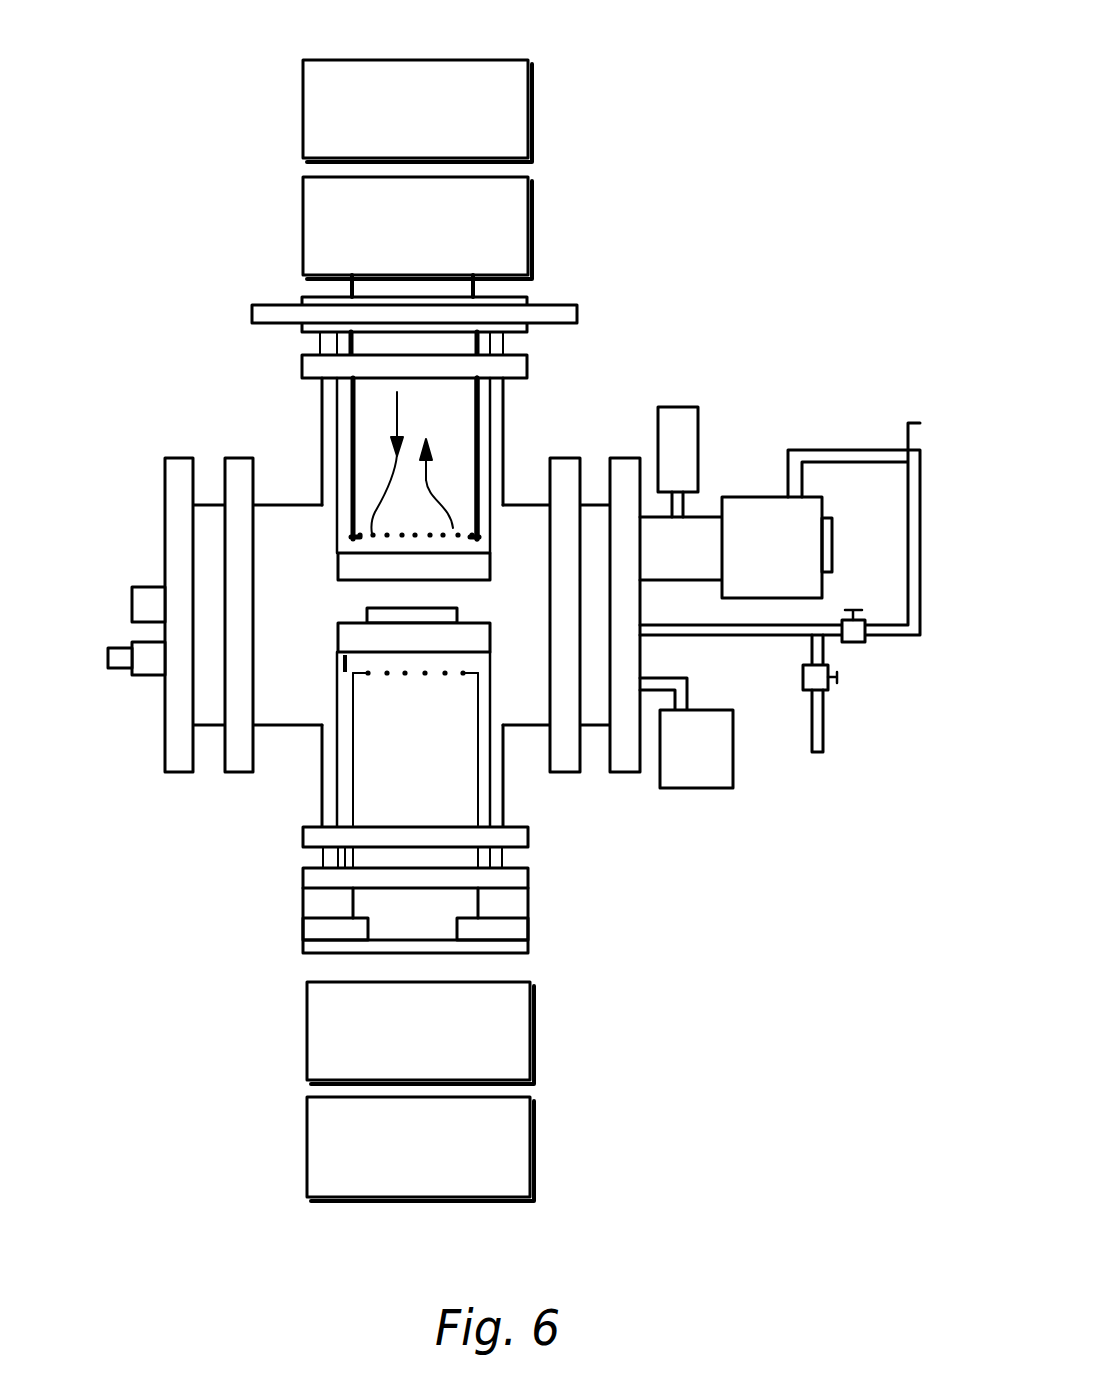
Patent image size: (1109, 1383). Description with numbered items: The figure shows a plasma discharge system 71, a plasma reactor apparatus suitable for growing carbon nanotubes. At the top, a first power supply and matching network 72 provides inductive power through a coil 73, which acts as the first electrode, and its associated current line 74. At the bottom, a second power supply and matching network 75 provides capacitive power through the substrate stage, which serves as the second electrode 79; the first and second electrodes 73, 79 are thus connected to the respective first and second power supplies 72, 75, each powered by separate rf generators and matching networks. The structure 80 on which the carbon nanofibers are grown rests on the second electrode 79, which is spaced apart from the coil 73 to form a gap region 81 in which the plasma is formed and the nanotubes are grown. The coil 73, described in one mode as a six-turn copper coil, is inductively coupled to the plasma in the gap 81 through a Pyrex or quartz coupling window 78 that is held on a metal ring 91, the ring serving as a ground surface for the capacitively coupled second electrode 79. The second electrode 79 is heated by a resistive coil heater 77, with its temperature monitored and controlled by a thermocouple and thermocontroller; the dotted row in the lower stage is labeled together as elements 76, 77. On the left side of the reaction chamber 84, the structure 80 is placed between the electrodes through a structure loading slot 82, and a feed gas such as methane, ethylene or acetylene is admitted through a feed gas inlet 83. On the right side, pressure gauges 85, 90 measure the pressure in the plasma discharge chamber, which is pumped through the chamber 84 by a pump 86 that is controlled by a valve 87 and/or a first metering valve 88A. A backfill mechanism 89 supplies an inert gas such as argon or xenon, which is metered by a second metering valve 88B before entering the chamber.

The plasma discharge system 71 is at (777, 49).
The first power supply and matching network 72 is at (598, 380).
The coil (first electrode) 73 is at (388, 533).
The current line 74 is at (393, 483).
The second power supply and matching network 75 is at (553, 1208).
The lower gas distribution holes 76 is at (445, 676).
The resistive coil heater 77 is at (415, 749).
The coupling window 78 is at (362, 570).
The second electrode 79 is at (485, 643).
The structure 80 is at (457, 617).
The gap region 81 is at (333, 567).
The structure loading slot 82 is at (132, 605).
The feed gas inlet 83 is at (108, 657).
The reaction chamber 84 is at (277, 727).
The pressure gauge 85 is at (680, 405).
The pump 86 is at (912, 423).
The valve 87 is at (745, 495).
The first metering valve 88A is at (857, 642).
The second metering valve 88B is at (808, 680).
The backfill mechanism 89 is at (817, 755).
The pressure gauge 90 is at (697, 790).
The metal ring 91 is at (480, 440).